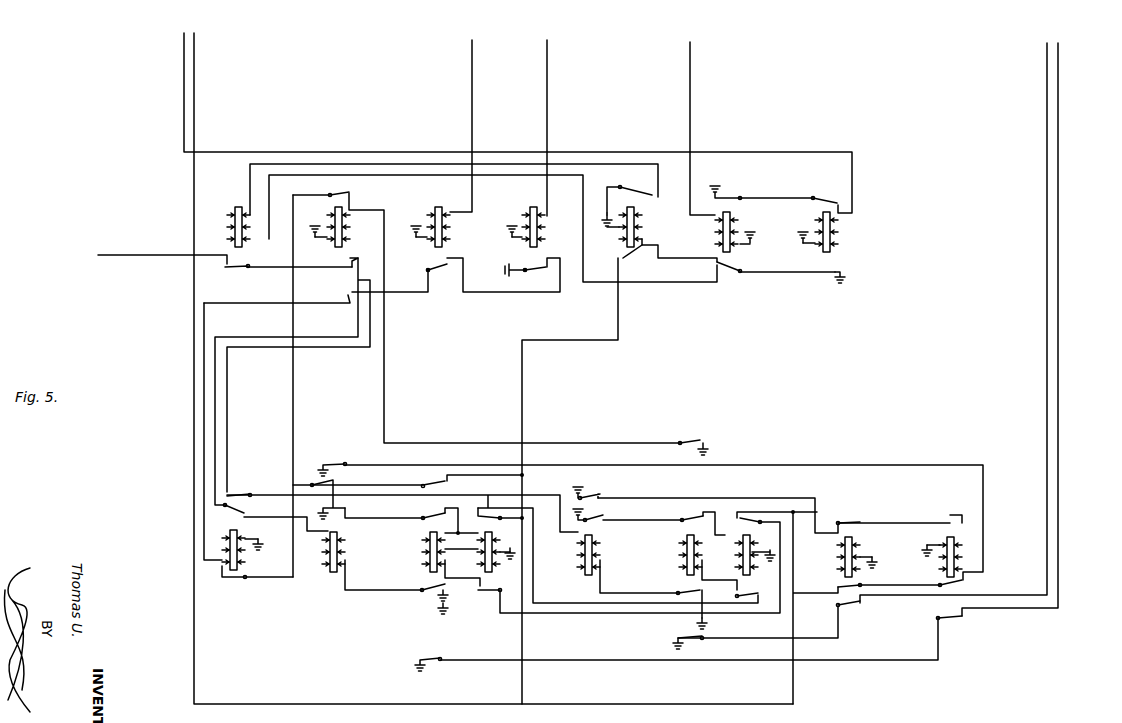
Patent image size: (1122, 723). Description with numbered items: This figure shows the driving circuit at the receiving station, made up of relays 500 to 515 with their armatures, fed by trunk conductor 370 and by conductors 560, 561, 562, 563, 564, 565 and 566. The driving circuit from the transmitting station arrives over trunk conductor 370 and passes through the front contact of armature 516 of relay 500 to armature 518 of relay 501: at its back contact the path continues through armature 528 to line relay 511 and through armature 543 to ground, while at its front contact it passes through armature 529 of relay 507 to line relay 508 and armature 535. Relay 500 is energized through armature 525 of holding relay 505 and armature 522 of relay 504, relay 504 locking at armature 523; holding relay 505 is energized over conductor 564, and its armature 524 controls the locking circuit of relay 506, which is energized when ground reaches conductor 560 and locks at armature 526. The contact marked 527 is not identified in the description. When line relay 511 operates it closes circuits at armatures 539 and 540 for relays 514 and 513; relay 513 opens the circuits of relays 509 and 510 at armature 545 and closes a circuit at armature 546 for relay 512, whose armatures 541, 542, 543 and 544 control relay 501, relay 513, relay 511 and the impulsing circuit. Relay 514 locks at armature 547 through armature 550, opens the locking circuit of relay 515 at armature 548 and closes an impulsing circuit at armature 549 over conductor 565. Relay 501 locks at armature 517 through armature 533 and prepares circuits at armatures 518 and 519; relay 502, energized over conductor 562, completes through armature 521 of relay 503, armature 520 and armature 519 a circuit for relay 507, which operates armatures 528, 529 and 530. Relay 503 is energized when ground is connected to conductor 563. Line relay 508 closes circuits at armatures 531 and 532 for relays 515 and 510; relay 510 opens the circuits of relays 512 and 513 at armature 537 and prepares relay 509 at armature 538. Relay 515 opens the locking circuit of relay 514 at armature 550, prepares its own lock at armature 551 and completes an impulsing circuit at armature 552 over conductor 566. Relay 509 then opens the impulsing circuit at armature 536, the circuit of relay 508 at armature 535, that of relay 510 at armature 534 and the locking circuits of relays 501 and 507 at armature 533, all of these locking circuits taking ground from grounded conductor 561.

The trunk conductor 370 is at (162, 249).
The relay 500 is at (224, 227).
The relay 501 is at (344, 227).
The relay 502 is at (446, 227).
The relay 503 is at (525, 214).
The relay 504 is at (641, 236).
The holding relay 505 is at (719, 232).
The relay 506 is at (807, 232).
The relay 507 is at (251, 550).
The line relay 508 is at (350, 552).
The relay 509 is at (414, 552).
The relay 510 is at (482, 552).
The line relay 511 is at (571, 555).
The relay 512 is at (672, 555).
The relay 513 is at (741, 555).
The relay 514 is at (840, 557).
The relay 515 is at (933, 557).
The armature 516 is at (240, 274).
The armature 517 is at (335, 187).
The armature 518 is at (346, 283).
The armature 519 is at (348, 305).
The armature 520 is at (438, 268).
The armature 521 is at (528, 266).
The armature 522 is at (629, 191).
The armature 523 is at (638, 258).
The armature 524 is at (733, 199).
The armature 525 is at (781, 268).
The armature 526 is at (829, 198).
The ground connection 527 is at (830, 280).
The armature 528 is at (227, 495).
The armature 529 is at (226, 516).
The armature 530 is at (235, 580).
The armature 531 is at (343, 457).
The armature 532 is at (339, 495).
The armature 533 is at (440, 486).
The armature 534 is at (438, 515).
The armature 535 is at (437, 590).
The armature 536 is at (440, 652).
The armature 537 is at (493, 499).
The armature 538 is at (470, 601).
The armature 539 is at (600, 486).
The armature 540 is at (603, 514).
The armature 541 is at (697, 439).
The armature 542 is at (685, 515).
The armature 543 is at (674, 593).
The armature 544 is at (677, 636).
The armature 545 is at (758, 515).
The armature 546 is at (753, 586).
The armature 547 is at (846, 520).
The armature 548 is at (838, 584).
The armature 549 is at (850, 607).
The armature 550 is at (960, 516).
The armature 551 is at (966, 586).
The armature 552 is at (962, 621).
The conductor 560 is at (186, 52).
The grounded conductor 561 is at (196, 72).
The conductor 562 is at (474, 56).
The conductor 563 is at (549, 56).
The conductor 564 is at (692, 68).
The conductor 565 is at (1049, 63).
The conductor 566 is at (1060, 92).